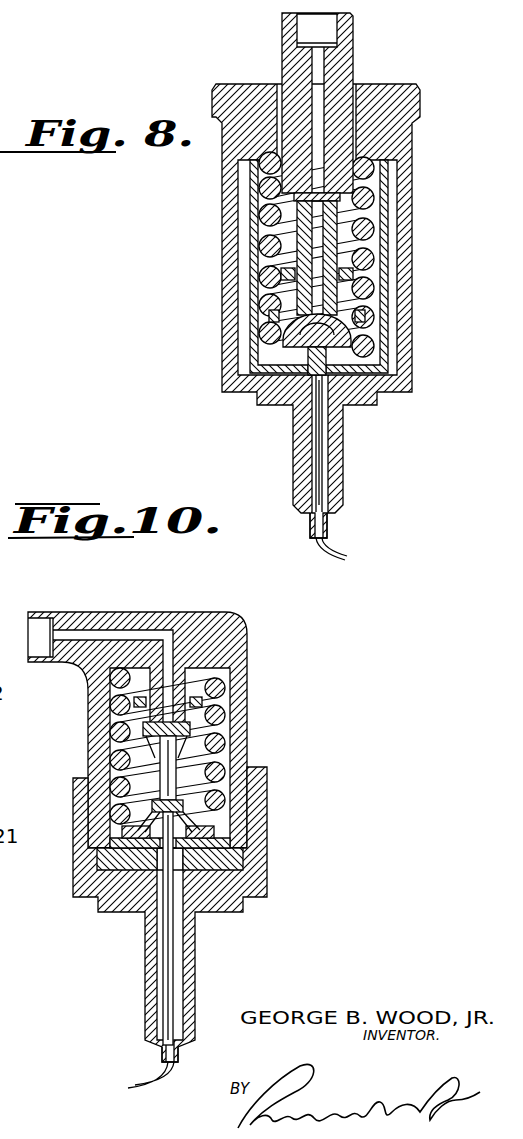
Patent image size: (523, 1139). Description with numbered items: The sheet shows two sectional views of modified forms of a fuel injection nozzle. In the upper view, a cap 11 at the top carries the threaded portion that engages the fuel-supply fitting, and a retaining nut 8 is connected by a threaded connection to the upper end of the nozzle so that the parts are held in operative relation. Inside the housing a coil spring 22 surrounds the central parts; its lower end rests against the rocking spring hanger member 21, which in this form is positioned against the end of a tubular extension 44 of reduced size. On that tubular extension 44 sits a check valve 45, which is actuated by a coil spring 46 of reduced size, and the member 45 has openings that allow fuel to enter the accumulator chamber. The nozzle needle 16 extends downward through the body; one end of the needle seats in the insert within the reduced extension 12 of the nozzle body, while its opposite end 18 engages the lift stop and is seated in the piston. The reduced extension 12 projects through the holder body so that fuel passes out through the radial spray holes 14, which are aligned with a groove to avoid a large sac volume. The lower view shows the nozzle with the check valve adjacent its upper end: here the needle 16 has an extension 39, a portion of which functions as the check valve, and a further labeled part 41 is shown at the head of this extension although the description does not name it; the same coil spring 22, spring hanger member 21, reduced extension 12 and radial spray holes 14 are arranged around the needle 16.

In FIG. 8, the retaining nut 8 is at (403, 98).
In FIG. 8, the cap 11 is at (340, 58).
In FIG. 8, the reduced extension 12 is at (326, 527).
In FIG. 10, the reduced extension 12 is at (163, 1055).
In FIG. 8, the radial spray holes 14 is at (347, 558).
In FIG. 10, the radial spray holes 14 is at (134, 1083).
In FIG. 8, the nozzle needle 16 is at (322, 450).
In FIG. 10, the nozzle needle 16 is at (172, 937).
In FIG. 10, the opposite end of nozzle needle 18 is at (236, 868).
In FIG. 8, the rocking spring hanger member 21 is at (382, 370).
In FIG. 10, the rocking spring hanger member 21 is at (232, 840).
In FIG. 8, the coil spring 22 is at (262, 341).
In FIG. 10, the coil spring 22 is at (222, 688).
In FIG. 10, the extension of needle 39 is at (222, 762).
In FIG. 10, the valve head 41 is at (192, 730).
In FIG. 8, the tubular extension 44 is at (333, 305).
In FIG. 8, the check valve 45 is at (365, 316).
In FIG. 10, the check valve 45 is at (215, 702).
In FIG. 8, the coil spring of reduced size 46 is at (353, 272).